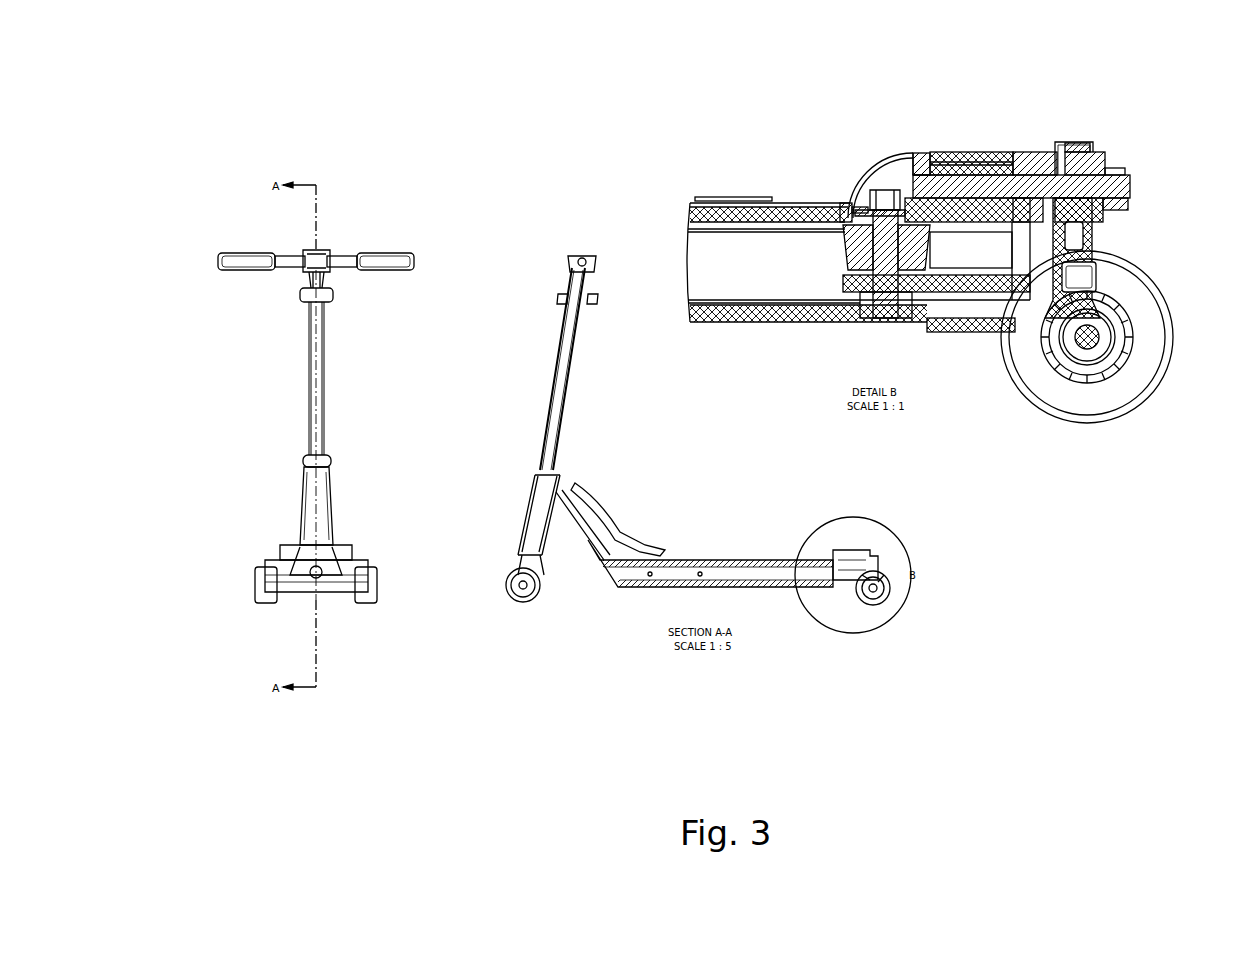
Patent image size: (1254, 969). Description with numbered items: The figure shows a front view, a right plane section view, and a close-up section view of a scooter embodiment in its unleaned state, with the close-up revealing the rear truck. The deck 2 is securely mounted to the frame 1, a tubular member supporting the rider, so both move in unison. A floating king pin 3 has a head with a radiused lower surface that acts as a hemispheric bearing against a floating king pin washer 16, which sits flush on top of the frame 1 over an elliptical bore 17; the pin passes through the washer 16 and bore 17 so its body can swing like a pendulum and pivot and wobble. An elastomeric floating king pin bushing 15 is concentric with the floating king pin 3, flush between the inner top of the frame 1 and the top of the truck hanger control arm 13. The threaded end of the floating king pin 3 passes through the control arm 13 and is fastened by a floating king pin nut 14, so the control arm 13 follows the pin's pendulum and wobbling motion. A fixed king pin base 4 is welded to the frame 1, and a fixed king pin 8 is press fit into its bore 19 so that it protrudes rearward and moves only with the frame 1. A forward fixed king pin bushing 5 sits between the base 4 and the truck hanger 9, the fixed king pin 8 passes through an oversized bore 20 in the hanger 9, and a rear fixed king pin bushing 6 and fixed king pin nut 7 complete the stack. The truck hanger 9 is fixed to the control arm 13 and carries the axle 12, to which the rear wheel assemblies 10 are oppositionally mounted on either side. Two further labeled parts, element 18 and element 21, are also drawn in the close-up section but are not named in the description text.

The frame 1 is at (715, 270).
The deck 2 is at (880, 173).
The floating king pin 3 is at (868, 201).
The fixed king pin base 4 is at (962, 158).
The forward fixed king pin bushing 5 is at (1035, 163).
The rear fixed king pin bushing 6 is at (1082, 153).
The fixed king pin nut 7 is at (1117, 167).
The fixed king pin 8 is at (1133, 177).
The truck hanger 9 is at (1095, 247).
The rear wheel assemblies 10 is at (1147, 330).
The axle 12 is at (1113, 375).
The truck hanger control arm 13 is at (998, 285).
The floating king pin nut 14 is at (867, 318).
The floating king pin bushing 15 is at (845, 267).
The floating king pin washer 16 is at (847, 203).
The elliptical bore 17 is at (858, 208).
The nut 18 is at (865, 292).
The bore 19 is at (987, 170).
The oversized bore 20 is at (1057, 150).
The insert 21 is at (1088, 150).